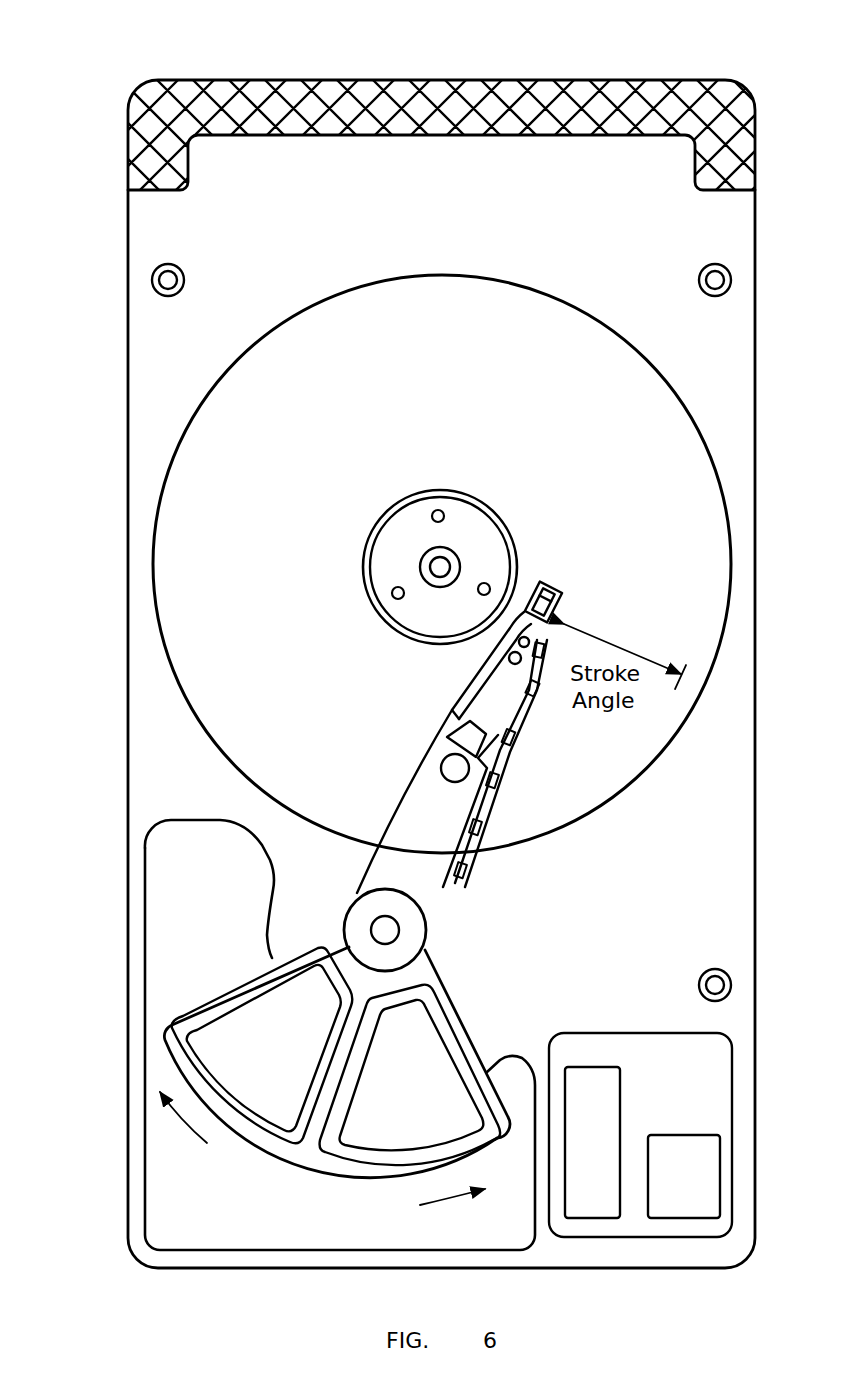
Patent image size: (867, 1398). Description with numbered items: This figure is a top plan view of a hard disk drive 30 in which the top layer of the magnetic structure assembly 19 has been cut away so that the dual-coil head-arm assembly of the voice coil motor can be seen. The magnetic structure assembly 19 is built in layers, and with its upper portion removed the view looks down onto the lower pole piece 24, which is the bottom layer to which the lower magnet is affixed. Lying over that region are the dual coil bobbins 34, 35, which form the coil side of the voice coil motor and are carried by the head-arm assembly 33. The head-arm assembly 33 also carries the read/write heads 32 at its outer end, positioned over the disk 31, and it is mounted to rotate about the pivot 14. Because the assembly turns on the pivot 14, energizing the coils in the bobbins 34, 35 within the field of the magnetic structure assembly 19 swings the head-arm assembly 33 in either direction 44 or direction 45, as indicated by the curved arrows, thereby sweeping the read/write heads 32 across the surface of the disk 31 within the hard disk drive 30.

The hard disk drive 30 is at (344, 66).
The disk 31 is at (193, 559).
The read/write heads 32 is at (568, 605).
The head-arm assembly 33 is at (448, 897).
The pivot 14 is at (390, 932).
The coil bobbin 34 is at (448, 1029).
The coil bobbin 35 is at (267, 1125).
The direction 44 is at (435, 1205).
The direction 45 is at (196, 1130).
The magnetic structure assembly 19 is at (130, 1057).
The lower pole piece 24 is at (209, 889).